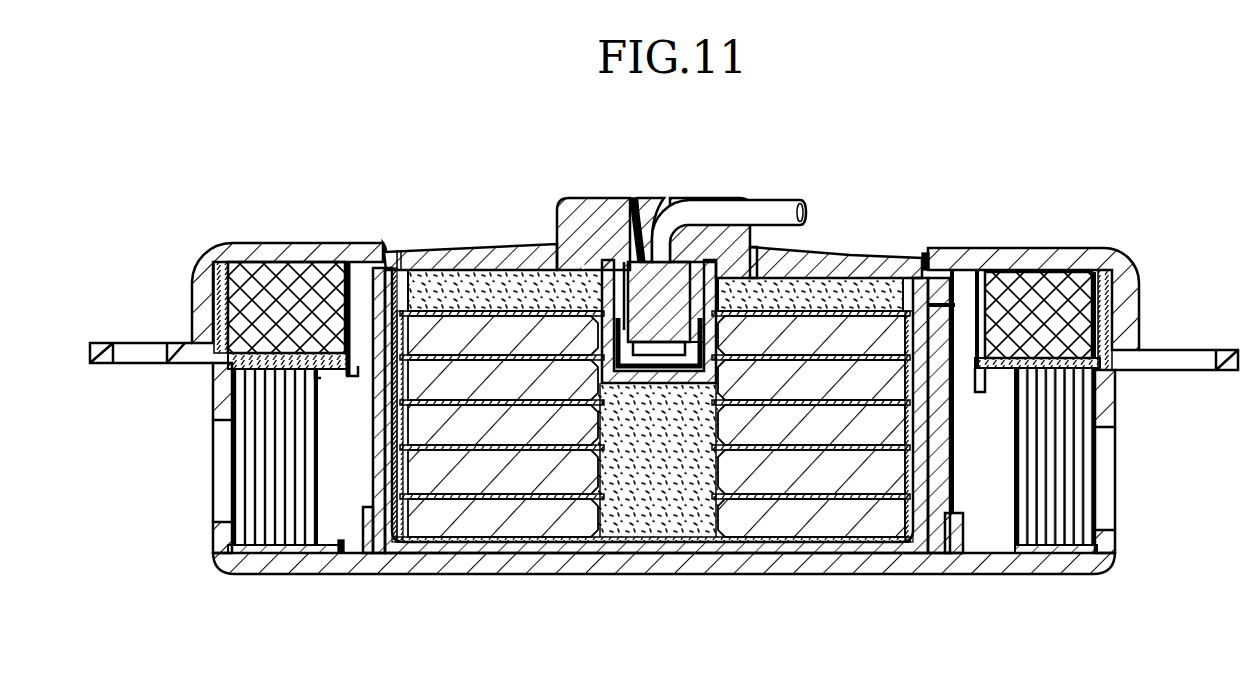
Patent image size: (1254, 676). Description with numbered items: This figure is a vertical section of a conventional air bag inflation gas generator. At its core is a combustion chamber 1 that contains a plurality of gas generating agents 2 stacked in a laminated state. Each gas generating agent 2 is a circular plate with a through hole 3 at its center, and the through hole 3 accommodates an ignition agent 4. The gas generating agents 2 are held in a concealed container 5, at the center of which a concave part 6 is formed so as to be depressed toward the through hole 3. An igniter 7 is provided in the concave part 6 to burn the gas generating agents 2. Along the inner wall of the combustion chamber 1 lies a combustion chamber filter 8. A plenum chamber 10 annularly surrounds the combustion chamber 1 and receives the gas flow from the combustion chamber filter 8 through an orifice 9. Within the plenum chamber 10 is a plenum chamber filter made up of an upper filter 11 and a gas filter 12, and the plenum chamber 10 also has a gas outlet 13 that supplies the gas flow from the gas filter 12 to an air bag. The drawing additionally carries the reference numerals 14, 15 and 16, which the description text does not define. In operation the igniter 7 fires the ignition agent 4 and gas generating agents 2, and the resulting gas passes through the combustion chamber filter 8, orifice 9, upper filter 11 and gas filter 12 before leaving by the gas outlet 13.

The combustion chamber 1 is at (440, 503).
The gas generating agents 2 is at (453, 330).
The through hole 3 is at (602, 519).
The ignition agent 4 is at (690, 518).
The concealed container 5 is at (677, 554).
The concave part 6 is at (611, 334).
The igniter 7 is at (682, 288).
The combustion chamber filter 8 is at (918, 523).
The orifice 9 is at (376, 318).
The plenum chamber 10 is at (997, 529).
The upper filter 11 is at (1038, 294).
The gas filter 12 is at (1078, 484).
The gas outlet 13 is at (1113, 466).
The collector foil 14 is at (727, 549).
The sealing packing 15 is at (847, 308).
The seal member 16 is at (384, 280).